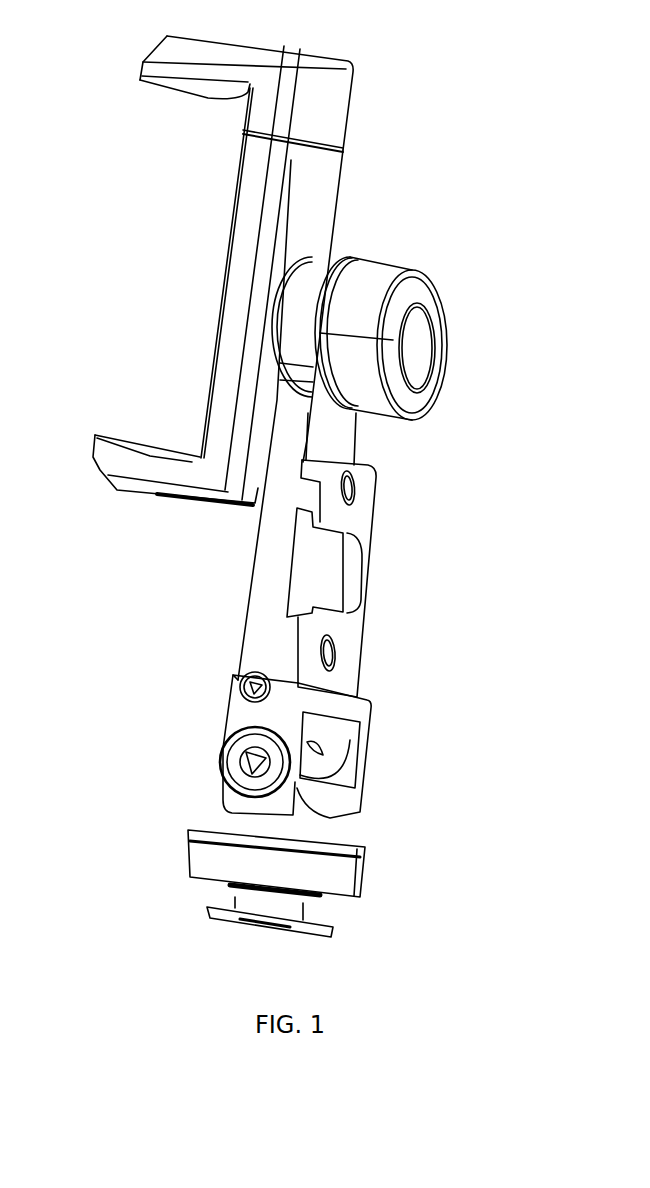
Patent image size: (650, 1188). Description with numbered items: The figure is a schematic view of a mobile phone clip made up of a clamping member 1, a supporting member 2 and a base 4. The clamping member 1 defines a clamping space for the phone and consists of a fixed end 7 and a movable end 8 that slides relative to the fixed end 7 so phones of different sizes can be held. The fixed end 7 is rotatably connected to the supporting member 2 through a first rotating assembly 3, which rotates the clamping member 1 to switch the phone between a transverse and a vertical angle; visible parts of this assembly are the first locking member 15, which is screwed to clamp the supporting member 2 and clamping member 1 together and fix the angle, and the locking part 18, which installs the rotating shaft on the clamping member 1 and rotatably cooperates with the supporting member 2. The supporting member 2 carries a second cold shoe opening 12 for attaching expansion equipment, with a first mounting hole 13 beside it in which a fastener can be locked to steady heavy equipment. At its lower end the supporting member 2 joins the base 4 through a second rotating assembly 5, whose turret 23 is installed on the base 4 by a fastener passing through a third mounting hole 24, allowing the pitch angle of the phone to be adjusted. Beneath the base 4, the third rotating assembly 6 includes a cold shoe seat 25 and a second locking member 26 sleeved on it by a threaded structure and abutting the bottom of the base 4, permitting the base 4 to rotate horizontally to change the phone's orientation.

The clamping member 1 is at (204, 270).
The supporting member 2 is at (325, 423).
The first rotating assembly 3 is at (400, 256).
The base 4 is at (345, 818).
The second rotating assembly 5 is at (160, 745).
The third rotating assembly 6 is at (363, 889).
The fixed end 7 is at (145, 442).
The movable end 8 is at (190, 92).
The second cold shoe opening 12 is at (363, 578).
The first mounting hole 13 is at (353, 493).
The first locking member 15 is at (315, 260).
The locking part 18 is at (387, 268).
The turret 23 is at (238, 715).
The third mounting hole 24 is at (253, 766).
The cold shoe seat 25 is at (320, 933).
The second locking member 26 is at (363, 883).